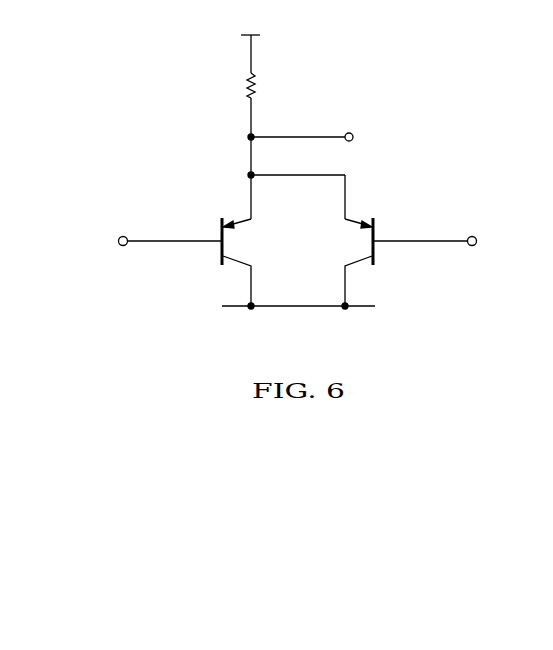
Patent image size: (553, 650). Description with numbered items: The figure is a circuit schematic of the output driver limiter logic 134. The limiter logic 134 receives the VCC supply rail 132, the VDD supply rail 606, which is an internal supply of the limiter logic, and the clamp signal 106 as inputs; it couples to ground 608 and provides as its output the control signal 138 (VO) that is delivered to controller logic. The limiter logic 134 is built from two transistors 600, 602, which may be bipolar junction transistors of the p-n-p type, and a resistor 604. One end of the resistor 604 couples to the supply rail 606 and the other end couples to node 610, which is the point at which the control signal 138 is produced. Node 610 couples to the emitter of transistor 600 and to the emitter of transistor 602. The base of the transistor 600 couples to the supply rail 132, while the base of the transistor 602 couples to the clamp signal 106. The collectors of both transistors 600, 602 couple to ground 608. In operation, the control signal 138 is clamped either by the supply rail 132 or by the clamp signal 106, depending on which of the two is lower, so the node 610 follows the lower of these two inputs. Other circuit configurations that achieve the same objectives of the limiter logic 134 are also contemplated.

The limiter logic 134 is at (435, 62).
The VDD supply rail 606 is at (250, 54).
The resistor 604 is at (246, 86).
The node 610 is at (249, 136).
The control signal 138 is at (350, 132).
The VCC supply rail 132 is at (123, 236).
The transistor 600 is at (221, 233).
The transistor 602 is at (375, 233).
The clamp signal 106 is at (472, 236).
The ground 608 is at (300, 308).